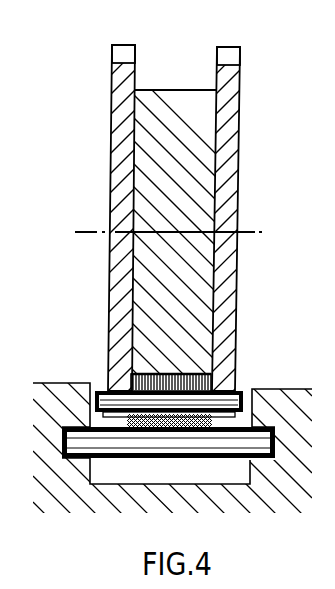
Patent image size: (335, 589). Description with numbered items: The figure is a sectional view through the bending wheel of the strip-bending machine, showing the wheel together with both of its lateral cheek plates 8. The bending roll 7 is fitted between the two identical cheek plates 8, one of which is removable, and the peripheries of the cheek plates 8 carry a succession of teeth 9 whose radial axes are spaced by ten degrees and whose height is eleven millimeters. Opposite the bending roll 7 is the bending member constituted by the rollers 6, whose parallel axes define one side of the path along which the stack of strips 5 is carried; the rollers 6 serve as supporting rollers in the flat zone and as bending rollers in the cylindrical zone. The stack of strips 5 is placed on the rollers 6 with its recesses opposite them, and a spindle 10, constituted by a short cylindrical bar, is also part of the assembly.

The stack of strips 5 is at (198, 376).
The rollers 6 is at (250, 448).
The bending roll 7 is at (177, 117).
The cheek plates 8 is at (119, 127).
The teeth 9 is at (118, 53).
The spindle 10 is at (113, 388).